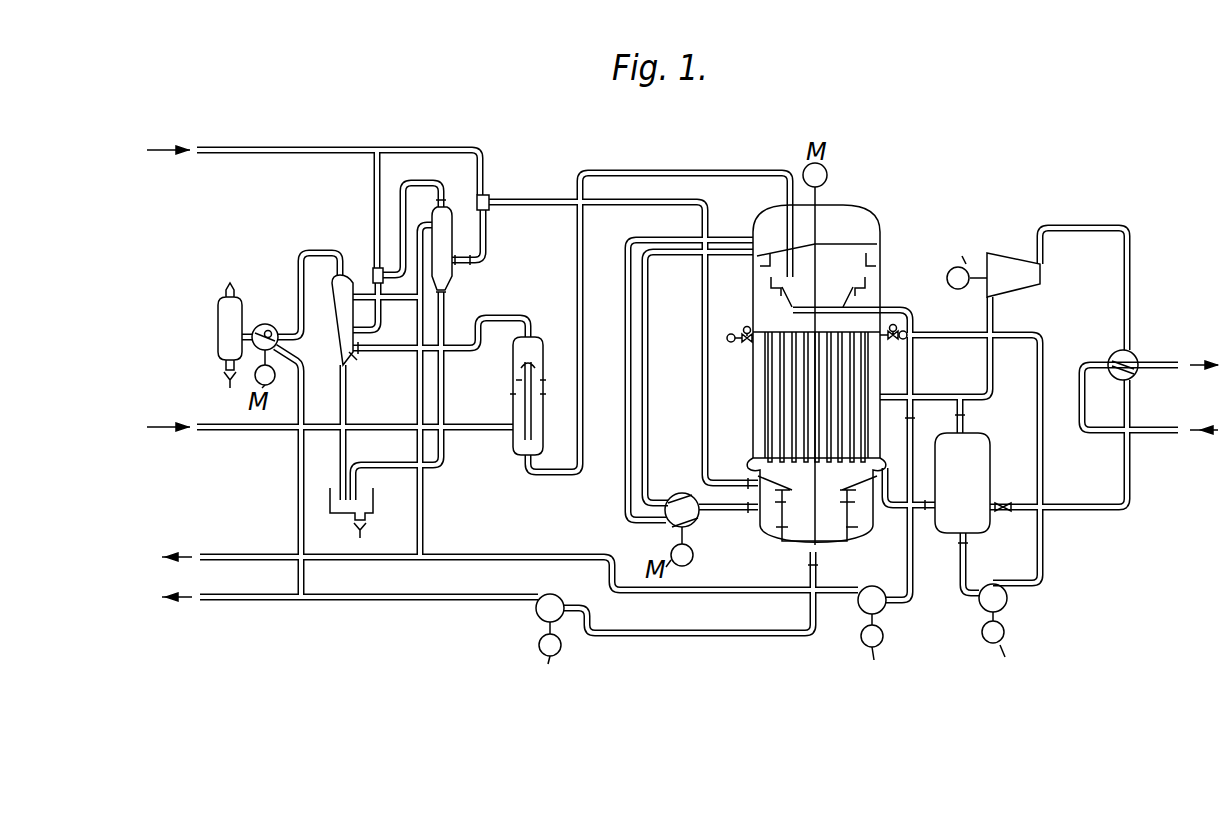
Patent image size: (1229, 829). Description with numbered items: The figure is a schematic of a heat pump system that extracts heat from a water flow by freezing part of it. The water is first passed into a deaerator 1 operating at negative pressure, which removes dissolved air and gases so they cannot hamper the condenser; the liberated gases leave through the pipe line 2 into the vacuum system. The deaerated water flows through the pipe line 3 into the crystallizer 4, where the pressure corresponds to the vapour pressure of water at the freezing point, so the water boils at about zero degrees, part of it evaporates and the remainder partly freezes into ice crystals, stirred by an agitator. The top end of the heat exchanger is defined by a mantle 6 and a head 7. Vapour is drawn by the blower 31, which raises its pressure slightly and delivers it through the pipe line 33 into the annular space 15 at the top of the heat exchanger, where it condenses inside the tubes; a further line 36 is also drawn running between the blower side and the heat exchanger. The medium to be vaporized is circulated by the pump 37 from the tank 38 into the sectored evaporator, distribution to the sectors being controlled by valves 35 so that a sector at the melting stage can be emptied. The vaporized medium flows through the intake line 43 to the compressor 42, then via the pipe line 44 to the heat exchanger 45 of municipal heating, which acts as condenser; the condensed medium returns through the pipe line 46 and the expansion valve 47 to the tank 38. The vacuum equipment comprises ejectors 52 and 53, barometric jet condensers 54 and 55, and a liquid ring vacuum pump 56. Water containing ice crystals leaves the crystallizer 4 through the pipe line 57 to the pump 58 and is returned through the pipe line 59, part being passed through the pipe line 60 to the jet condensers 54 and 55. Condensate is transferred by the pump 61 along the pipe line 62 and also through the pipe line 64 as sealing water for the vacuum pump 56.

The deaerator 1 is at (511, 388).
The pipe line 2 is at (440, 333).
The pipe line 3 is at (659, 322).
The crystallizer 4 is at (850, 251).
The mantle 6 is at (881, 287).
The head 7 is at (866, 212).
The annular space 15 is at (860, 229).
The blower 31 is at (666, 524).
The pipe line 33 is at (699, 377).
The valve 35 is at (973, 459).
The line 36 is at (623, 342).
The pump 37 is at (1009, 604).
The tank 38 is at (978, 455).
The compressor 42 is at (1032, 273).
The intake line 43 is at (935, 347).
The pipe line 44 is at (1083, 289).
The heat exchanger 45 is at (1130, 397).
The pipe line 46 is at (1058, 443).
The expansion valve 47 is at (999, 513).
The ejector 52 is at (467, 235).
The ejector 53 is at (375, 325).
The barometric jet condenser 54 is at (450, 283).
The barometric jet condenser 55 is at (350, 362).
The liquid ring vacuum pump 56 is at (262, 323).
The pipe line 57 is at (898, 467).
The pump 58 is at (885, 612).
The pipe line 59 is at (529, 573).
The pipe line 60 is at (426, 391).
The pump 61 is at (536, 612).
The pipe line 62 is at (688, 592).
The pipe line 64 is at (288, 472).